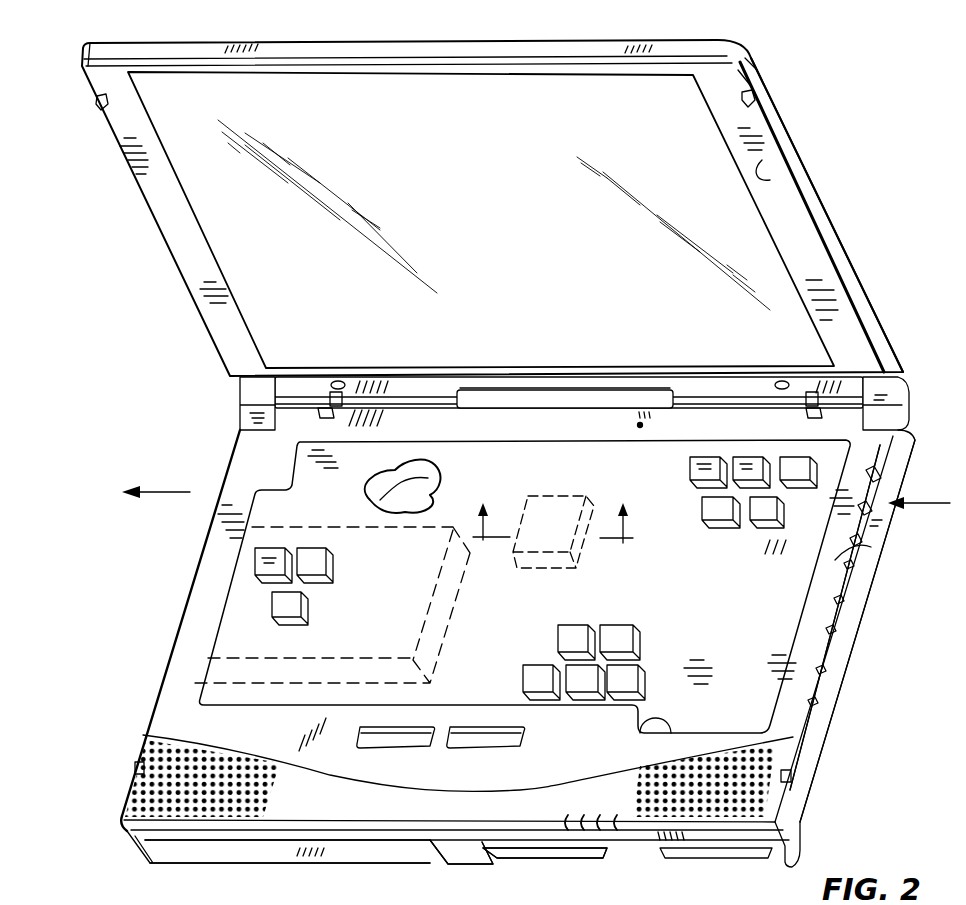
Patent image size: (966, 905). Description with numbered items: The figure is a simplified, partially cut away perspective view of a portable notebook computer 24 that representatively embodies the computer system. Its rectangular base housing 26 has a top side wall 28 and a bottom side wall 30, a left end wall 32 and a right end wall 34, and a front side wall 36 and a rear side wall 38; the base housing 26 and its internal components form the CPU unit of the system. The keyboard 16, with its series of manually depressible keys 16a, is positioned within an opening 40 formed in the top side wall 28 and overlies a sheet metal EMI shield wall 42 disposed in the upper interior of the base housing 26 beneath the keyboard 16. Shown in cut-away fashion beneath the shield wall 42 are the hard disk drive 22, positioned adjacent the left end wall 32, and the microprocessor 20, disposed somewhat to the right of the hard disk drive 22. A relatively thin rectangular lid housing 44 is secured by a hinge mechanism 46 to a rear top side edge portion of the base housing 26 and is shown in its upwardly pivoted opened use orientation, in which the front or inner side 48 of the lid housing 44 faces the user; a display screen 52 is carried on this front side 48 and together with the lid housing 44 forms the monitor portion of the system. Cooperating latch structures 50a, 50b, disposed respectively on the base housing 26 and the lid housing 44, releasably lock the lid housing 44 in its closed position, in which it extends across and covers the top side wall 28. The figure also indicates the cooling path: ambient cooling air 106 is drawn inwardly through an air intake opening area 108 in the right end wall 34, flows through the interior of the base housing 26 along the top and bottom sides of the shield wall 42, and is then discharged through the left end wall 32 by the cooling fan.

The portable notebook computer 24 is at (810, 84).
The lid housing 44 is at (826, 196).
The front side of the lid housing 48 is at (770, 178).
The display screen 52 is at (498, 246).
The latch structure 50b is at (99, 106).
The rear side wall 38 is at (914, 446).
The hinge mechanism 46 is at (262, 396).
The keyboard 16 is at (530, 638).
The keys 16a is at (300, 606).
The sheet metal EMI shield wall 42 is at (426, 478).
The microprocessor 20 is at (550, 486).
The hard disk drive 22 is at (436, 632).
The opening 40 is at (638, 728).
The ambient cooling air 106 is at (167, 492).
The air intake opening area 108 is at (880, 528).
The top side wall 28 is at (845, 557).
The base housing 26 is at (846, 683).
The right end wall 34 is at (822, 745).
The latch structure 50a is at (135, 767).
The left end wall 32 is at (142, 852).
The front side wall 36 is at (468, 856).
The bottom side wall 30 is at (473, 868).